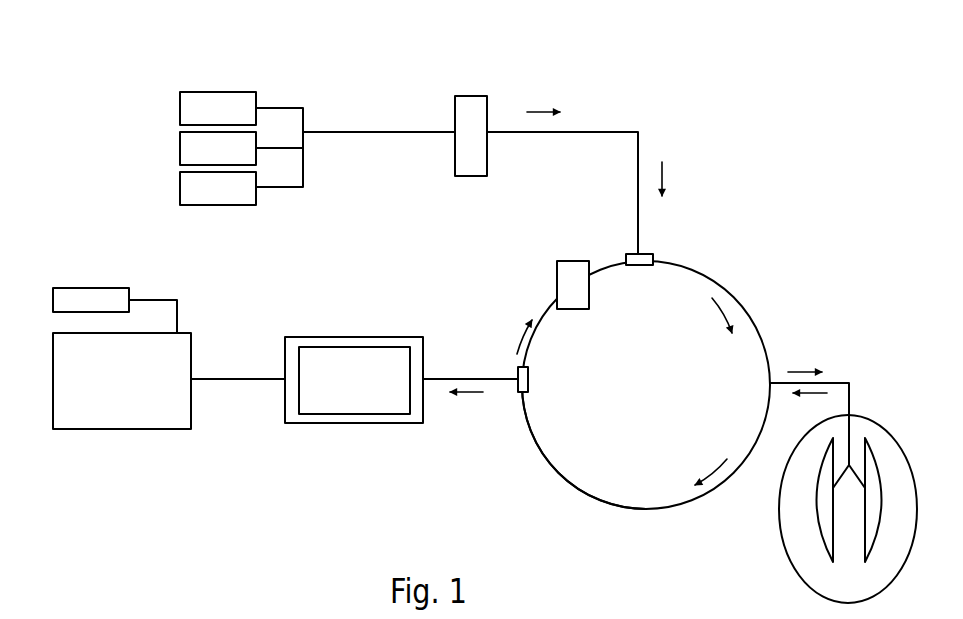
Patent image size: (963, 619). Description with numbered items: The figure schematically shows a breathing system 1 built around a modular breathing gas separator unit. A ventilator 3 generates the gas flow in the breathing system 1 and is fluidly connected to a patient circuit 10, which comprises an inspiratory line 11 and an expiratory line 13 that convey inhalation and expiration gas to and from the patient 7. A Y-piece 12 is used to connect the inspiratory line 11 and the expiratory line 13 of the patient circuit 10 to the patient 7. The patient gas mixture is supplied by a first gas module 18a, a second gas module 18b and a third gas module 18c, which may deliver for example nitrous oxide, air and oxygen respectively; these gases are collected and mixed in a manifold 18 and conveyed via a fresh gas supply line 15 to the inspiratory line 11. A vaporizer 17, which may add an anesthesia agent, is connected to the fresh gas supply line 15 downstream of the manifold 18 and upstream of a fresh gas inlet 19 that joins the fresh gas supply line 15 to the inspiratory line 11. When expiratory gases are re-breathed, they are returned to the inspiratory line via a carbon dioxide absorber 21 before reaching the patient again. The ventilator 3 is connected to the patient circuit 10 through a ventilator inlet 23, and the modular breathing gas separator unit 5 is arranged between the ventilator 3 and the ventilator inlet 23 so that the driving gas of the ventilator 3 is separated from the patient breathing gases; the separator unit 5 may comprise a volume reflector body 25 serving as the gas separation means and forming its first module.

The breathing system 1 is at (160, 52).
The ventilator 3 is at (53, 383).
The modular breathing gas separator unit 5 is at (383, 404).
The patient 7 is at (781, 494).
The patient circuit 10 is at (708, 211).
The inspiratory line 11 is at (695, 269).
The Y-piece 12 is at (852, 393).
The expiratory line 13 is at (543, 458).
The fresh gas supply line 15 is at (365, 131).
The vaporizer 17 is at (470, 96).
The manifold 18 is at (221, 120).
The first gas module 18a is at (180, 108).
The second gas module 18b is at (180, 148).
The third gas module 18c is at (180, 190).
The fresh gas inlet 19 is at (643, 265).
The carbon dioxide absorber 21 is at (589, 290).
The ventilator inlet 23 is at (530, 373).
The volume reflector body 25 is at (335, 415).